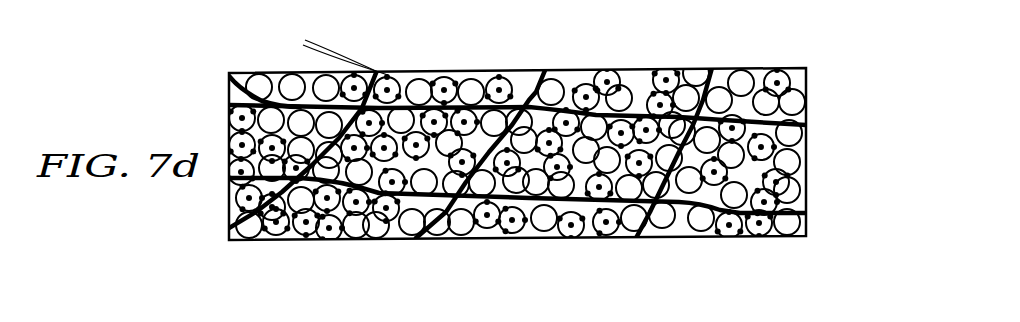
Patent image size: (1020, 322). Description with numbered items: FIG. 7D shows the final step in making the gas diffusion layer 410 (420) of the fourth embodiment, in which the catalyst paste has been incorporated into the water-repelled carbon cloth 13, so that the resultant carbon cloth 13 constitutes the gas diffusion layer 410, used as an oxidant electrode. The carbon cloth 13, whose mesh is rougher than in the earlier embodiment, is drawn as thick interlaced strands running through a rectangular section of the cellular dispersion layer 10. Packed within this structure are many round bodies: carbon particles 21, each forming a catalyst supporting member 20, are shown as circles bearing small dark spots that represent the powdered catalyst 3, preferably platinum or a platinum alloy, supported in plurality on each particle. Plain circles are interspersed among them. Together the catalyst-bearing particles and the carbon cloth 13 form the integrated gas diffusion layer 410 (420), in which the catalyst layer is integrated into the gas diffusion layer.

The cellular dispersion layer 10 is at (763, 68).
The powdered catalyst 3 is at (293, 73).
The catalyst supporting member 20 is at (417, 93).
The carbon particle 21 is at (442, 163).
The carbon cloth 13 is at (618, 98).
The gas diffusion layer 410 is at (565, 185).
The gas diffusion layer 420 is at (814, 211).